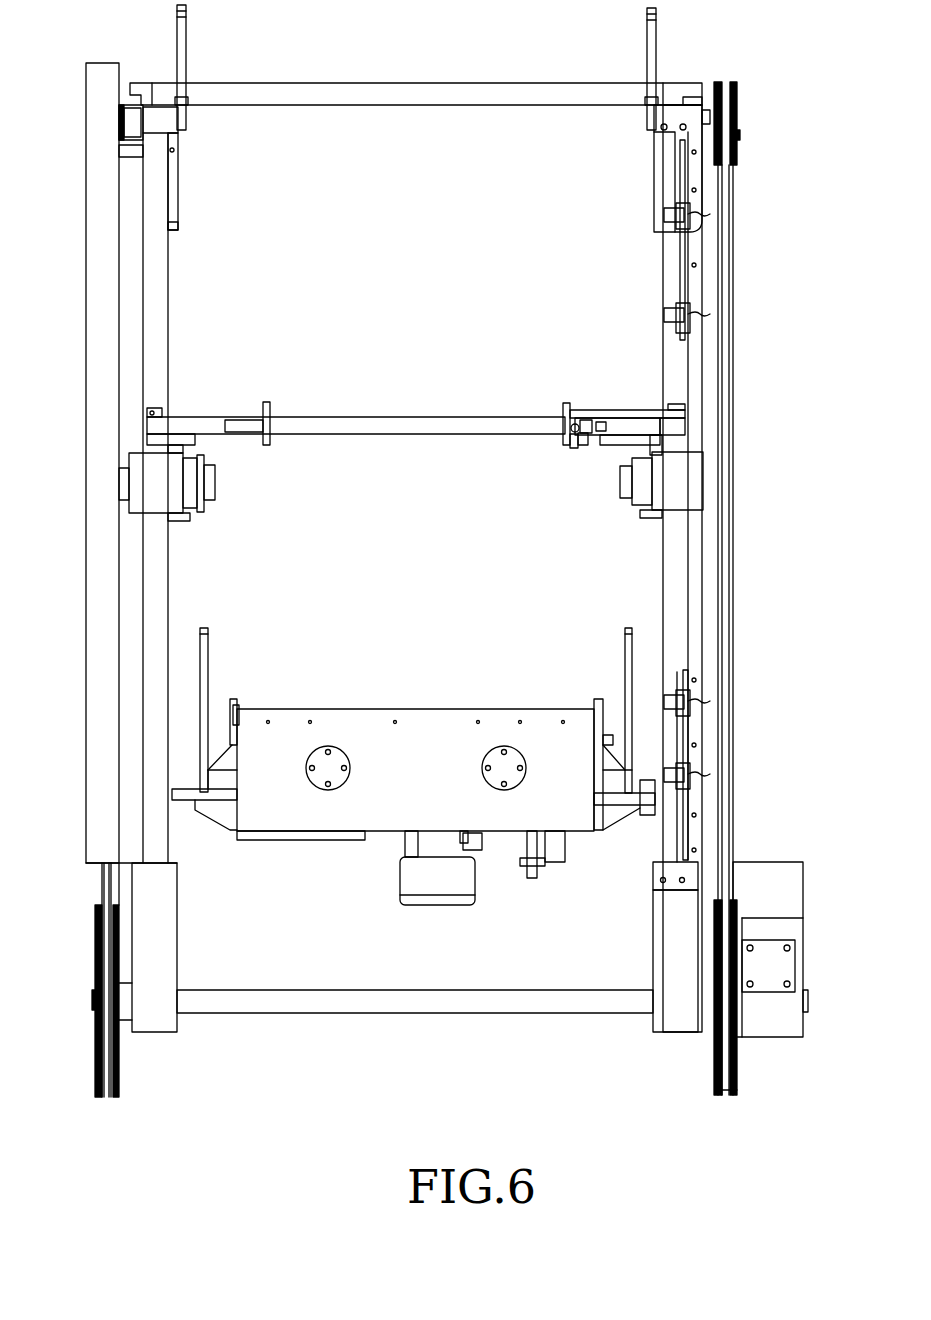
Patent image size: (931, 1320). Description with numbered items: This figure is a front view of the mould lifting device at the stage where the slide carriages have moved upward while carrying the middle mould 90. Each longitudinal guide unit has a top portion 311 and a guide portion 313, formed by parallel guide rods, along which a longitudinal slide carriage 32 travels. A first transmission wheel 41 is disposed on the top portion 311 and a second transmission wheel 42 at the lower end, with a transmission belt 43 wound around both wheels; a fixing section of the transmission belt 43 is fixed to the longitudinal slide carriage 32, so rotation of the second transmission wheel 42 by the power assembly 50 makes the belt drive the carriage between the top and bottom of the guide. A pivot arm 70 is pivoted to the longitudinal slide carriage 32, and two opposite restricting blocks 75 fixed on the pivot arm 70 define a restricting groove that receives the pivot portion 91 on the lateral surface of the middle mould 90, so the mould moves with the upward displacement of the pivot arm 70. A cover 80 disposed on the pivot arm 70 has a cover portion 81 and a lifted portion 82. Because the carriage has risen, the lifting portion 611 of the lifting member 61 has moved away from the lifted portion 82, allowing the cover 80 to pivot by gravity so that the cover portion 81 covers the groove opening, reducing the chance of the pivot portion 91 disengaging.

The top portion 311 is at (698, 118).
The first transmission wheel 41 is at (735, 108).
The transmission belt 43 is at (730, 222).
The guide portion 313 is at (682, 380).
The longitudinal slide carriage 32 is at (690, 465).
The middle mould 90 is at (345, 416).
The pivot portion 91 is at (563, 428).
The lifted portion 82 is at (588, 425).
The cover 80 is at (616, 403).
The cover portion 81 is at (640, 416).
The restricting block 75 is at (583, 440).
The pivot arm 70 is at (572, 447).
The lifting portion 611 is at (628, 628).
The lifting member 61 is at (618, 668).
The power assembly 50 is at (770, 990).
The second transmission wheel 42 is at (718, 1050).